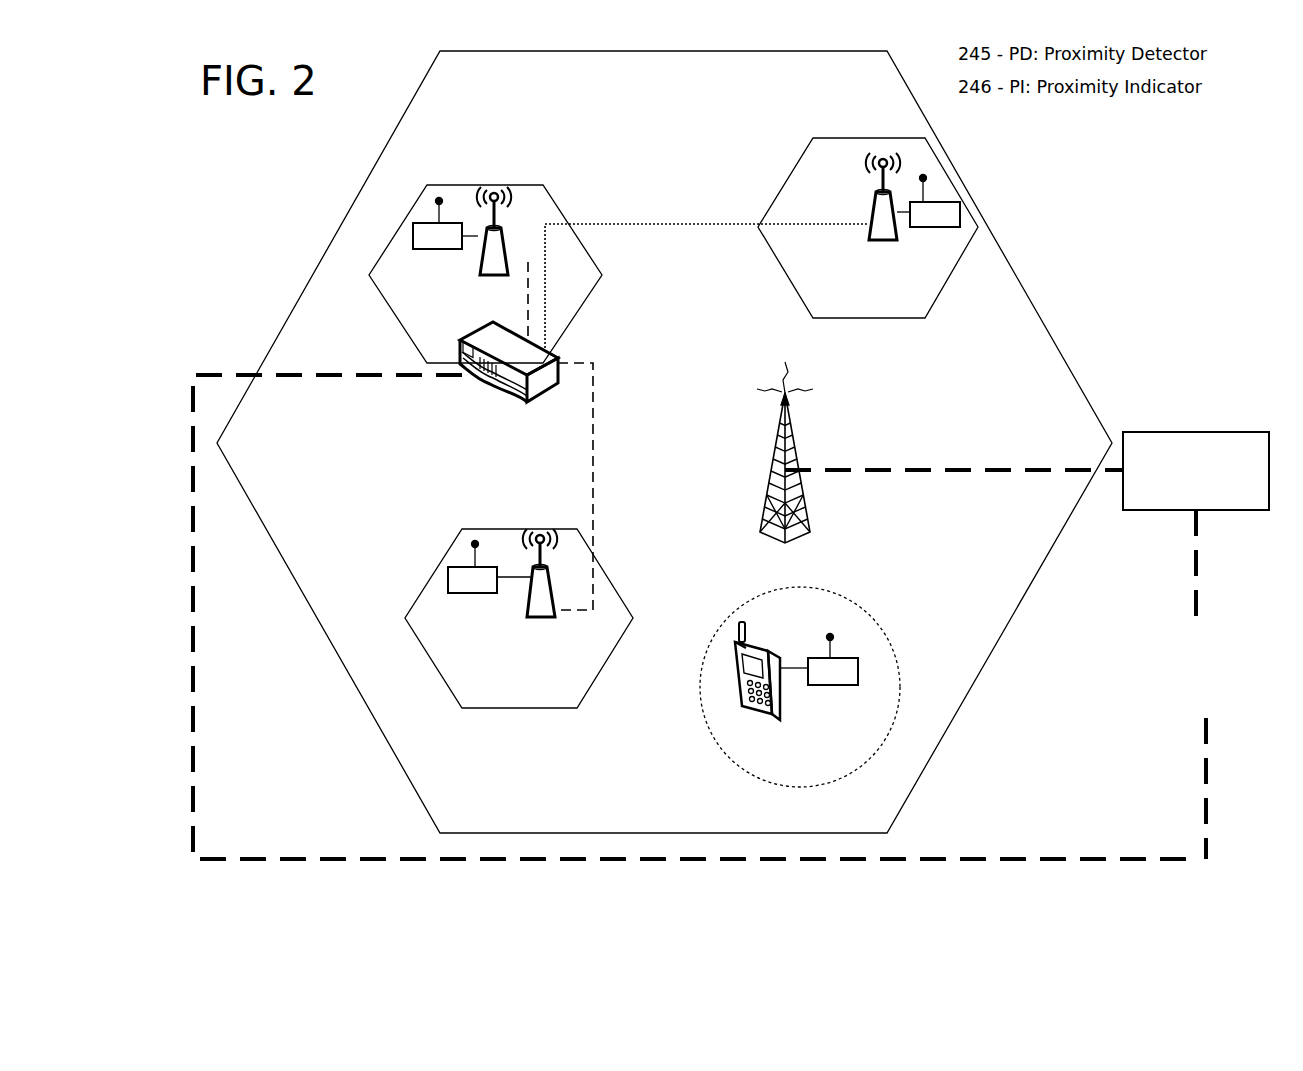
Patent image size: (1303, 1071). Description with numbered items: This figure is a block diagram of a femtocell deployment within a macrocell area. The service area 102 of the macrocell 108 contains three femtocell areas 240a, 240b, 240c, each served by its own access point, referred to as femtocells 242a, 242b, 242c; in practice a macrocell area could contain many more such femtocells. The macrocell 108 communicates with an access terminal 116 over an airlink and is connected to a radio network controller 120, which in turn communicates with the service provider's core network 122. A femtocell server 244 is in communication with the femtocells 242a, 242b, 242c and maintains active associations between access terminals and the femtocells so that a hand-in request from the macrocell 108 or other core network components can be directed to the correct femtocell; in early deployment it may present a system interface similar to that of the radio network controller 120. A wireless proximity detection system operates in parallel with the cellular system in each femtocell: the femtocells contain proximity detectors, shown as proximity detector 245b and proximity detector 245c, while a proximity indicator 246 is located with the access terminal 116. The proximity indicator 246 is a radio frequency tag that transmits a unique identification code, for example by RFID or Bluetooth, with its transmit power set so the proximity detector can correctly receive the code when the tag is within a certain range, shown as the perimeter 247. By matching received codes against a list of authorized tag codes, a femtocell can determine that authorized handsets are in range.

The macrocell area 102 is at (400, 154).
The macrocell 108 is at (760, 532).
The access terminal 116 is at (752, 716).
The radio network controller 120 is at (1196, 471).
The service provider's core network 122 is at (1184, 624).
The femtocell area 240a is at (616, 567).
The femtocell area 240b is at (980, 210).
The femtocell area 240c is at (544, 170).
The femtocell 242a is at (528, 614).
The femtocell 242b is at (871, 238).
The femtocell 242c is at (482, 272).
The femtocell server 244 is at (487, 386).
The proximity detector 245b is at (920, 227).
The proximity detector 245c is at (421, 249).
The proximity indicator 246 is at (822, 685).
The perimeter 247 is at (875, 608).